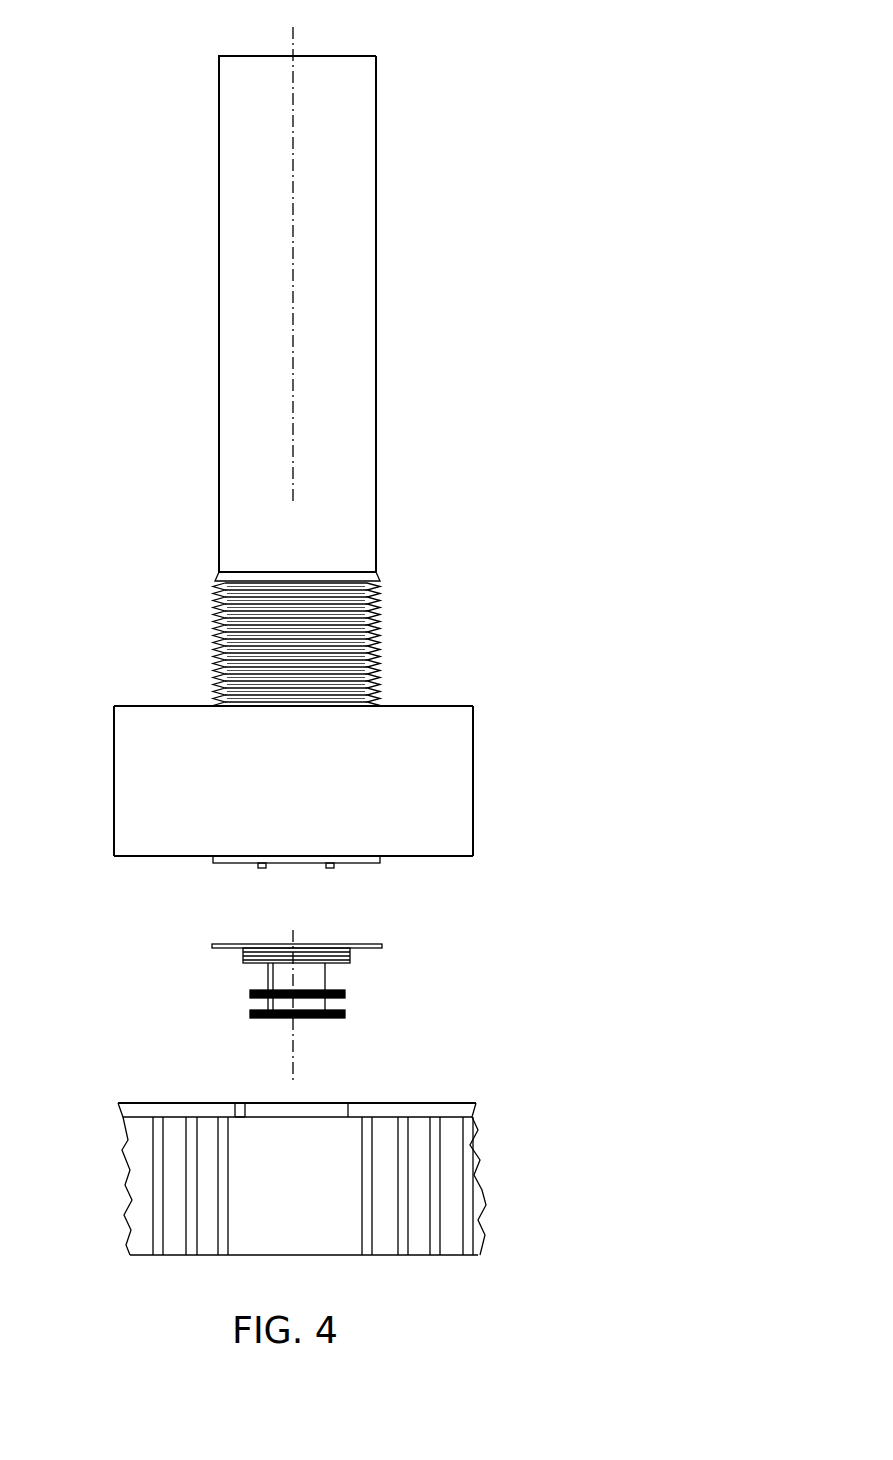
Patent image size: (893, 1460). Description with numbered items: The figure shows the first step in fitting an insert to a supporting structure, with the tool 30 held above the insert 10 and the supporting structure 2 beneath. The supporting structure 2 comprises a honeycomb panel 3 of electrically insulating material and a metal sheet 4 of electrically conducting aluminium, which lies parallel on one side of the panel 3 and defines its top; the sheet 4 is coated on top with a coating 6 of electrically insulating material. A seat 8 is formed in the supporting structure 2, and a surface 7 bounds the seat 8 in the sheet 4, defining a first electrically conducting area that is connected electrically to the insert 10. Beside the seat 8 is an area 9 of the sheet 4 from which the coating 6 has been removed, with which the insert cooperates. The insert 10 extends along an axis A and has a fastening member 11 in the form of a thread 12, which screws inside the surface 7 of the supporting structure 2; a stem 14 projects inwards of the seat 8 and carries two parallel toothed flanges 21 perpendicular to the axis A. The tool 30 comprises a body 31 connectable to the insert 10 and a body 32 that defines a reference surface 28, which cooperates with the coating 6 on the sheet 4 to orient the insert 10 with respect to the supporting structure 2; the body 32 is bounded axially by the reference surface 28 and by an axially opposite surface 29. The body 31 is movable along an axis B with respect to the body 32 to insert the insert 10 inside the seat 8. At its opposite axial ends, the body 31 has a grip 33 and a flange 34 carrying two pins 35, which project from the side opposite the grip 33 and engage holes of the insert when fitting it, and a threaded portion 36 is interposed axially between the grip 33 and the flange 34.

The supporting structure 2 is at (512, 1117).
The honeycomb panel 3 is at (420, 1172).
The metal sheet 4 is at (267, 1103).
The coating 6 is at (128, 1102).
The surface 7 is at (251, 1112).
The seat 8 is at (233, 1210).
The area 9 is at (237, 1112).
The insert 10 is at (470, 974).
The fastening member 11 is at (352, 943).
The thread 12 is at (349, 953).
The stem 14 is at (277, 980).
The toothed flanges 21 is at (250, 992).
The reference surface 28 is at (165, 853).
The surface 29 is at (130, 712).
The tool 30 is at (500, 152).
The body 31 is at (335, 318).
The body 32 is at (328, 776).
The grip 33 is at (362, 232).
The flange 34 is at (231, 863).
The pins 35 is at (330, 868).
The threaded portion 36 is at (354, 630).
The axis A is at (293, 1065).
The axis B is at (292, 40).